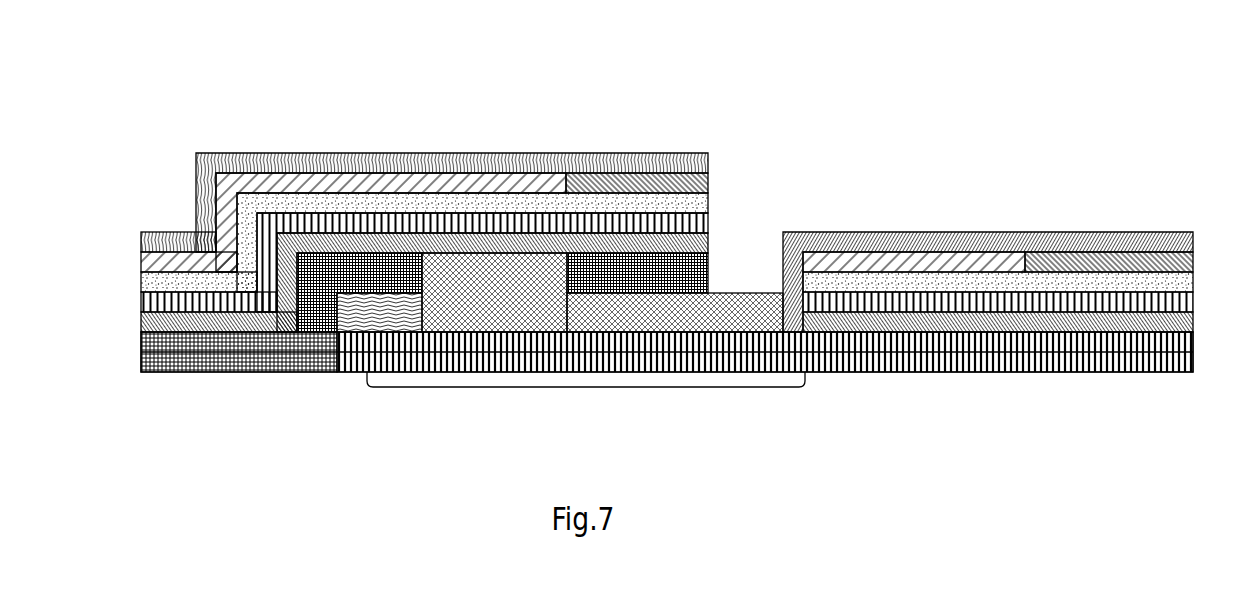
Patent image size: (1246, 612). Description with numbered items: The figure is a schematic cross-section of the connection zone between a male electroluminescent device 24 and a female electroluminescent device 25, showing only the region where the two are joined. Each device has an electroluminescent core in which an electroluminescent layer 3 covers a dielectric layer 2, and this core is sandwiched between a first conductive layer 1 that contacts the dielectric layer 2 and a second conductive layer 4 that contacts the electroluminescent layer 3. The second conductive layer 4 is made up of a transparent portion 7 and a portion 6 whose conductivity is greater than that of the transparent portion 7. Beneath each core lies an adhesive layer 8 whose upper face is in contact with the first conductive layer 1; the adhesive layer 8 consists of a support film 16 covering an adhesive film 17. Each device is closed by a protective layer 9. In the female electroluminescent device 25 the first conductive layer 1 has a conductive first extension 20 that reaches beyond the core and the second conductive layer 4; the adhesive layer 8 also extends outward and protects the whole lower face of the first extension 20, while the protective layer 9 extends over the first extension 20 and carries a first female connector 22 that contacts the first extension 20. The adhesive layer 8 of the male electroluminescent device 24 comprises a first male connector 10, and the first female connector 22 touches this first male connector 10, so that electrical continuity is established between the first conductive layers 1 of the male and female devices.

The first conductive layer 1 is at (141, 321).
The dielectric layer 2 is at (141, 302).
The electroluminescent layer 3 is at (141, 282).
The second conductive layer 4 is at (141, 262).
The portion of greater conductivity 6 is at (645, 178).
The transparent portion 7 is at (412, 178).
The adhesive layer 8 is at (667, 385).
The protective layer 9 is at (141, 242).
The first male connector 10 is at (440, 283).
The support film 16 is at (197, 350).
The adhesive film 17 is at (165, 373).
The first extension 20 is at (483, 389).
The first female connector 22 is at (543, 303).
The male electroluminescent device 24 is at (315, 150).
The female electroluminescent device 25 is at (1113, 375).